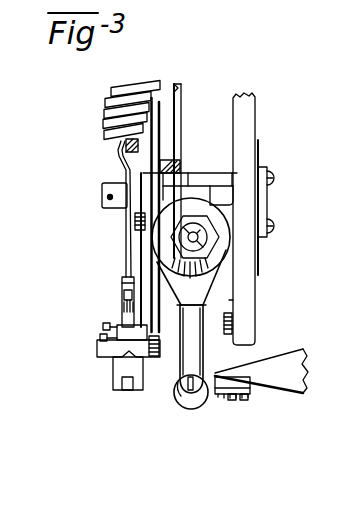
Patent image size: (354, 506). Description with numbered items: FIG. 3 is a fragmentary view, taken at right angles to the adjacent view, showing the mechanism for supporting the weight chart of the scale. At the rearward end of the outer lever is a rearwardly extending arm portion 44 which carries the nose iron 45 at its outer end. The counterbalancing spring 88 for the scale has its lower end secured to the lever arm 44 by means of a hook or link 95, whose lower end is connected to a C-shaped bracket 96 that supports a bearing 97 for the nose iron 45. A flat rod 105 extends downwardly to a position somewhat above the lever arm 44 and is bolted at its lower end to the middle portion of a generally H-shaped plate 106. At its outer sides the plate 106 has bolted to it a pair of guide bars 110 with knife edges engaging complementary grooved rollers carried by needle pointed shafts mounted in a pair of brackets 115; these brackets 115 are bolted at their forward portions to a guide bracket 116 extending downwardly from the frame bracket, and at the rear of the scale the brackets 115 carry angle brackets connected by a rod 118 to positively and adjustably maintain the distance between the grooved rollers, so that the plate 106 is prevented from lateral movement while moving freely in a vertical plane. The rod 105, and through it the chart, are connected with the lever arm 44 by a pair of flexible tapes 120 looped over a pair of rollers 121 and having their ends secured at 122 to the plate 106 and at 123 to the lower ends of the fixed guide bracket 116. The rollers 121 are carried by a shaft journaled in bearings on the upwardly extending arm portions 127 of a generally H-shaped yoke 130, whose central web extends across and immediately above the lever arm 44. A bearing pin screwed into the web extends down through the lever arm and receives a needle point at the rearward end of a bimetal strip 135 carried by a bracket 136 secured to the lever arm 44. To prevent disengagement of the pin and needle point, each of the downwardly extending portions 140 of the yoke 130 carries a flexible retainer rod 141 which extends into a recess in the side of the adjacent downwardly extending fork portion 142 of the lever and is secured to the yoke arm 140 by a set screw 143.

The rearwardly extending arm portion 44 is at (307, 375).
The nose iron 45 is at (100, 353).
The counterbalancing spring 88 is at (104, 108).
The hook or link 95 is at (125, 228).
The C-shaped bracket 96 is at (126, 314).
The bearing 97 is at (113, 375).
The flat rod 105 is at (178, 92).
The H-shaped plate 106 is at (150, 170).
The guide bars 110 is at (152, 158).
The brackets 115 is at (198, 178).
The guide bracket 116 is at (247, 113).
The rod 118 is at (108, 197).
The flexible tapes 120 is at (153, 266).
The rollers 121 is at (232, 222).
The tape end securement 122 is at (155, 372).
The tape end securement 123 is at (229, 328).
The upwardly extending arm portions 127 is at (228, 260).
The H-shaped yoke 130 is at (196, 285).
The bimetal strip 135 is at (245, 388).
The bracket 136 is at (253, 403).
The downwardly extending portions 140 is at (192, 350).
The flexible retainer rod 141 is at (207, 393).
The fork portion 142 is at (195, 403).
The set screw 143 is at (177, 400).